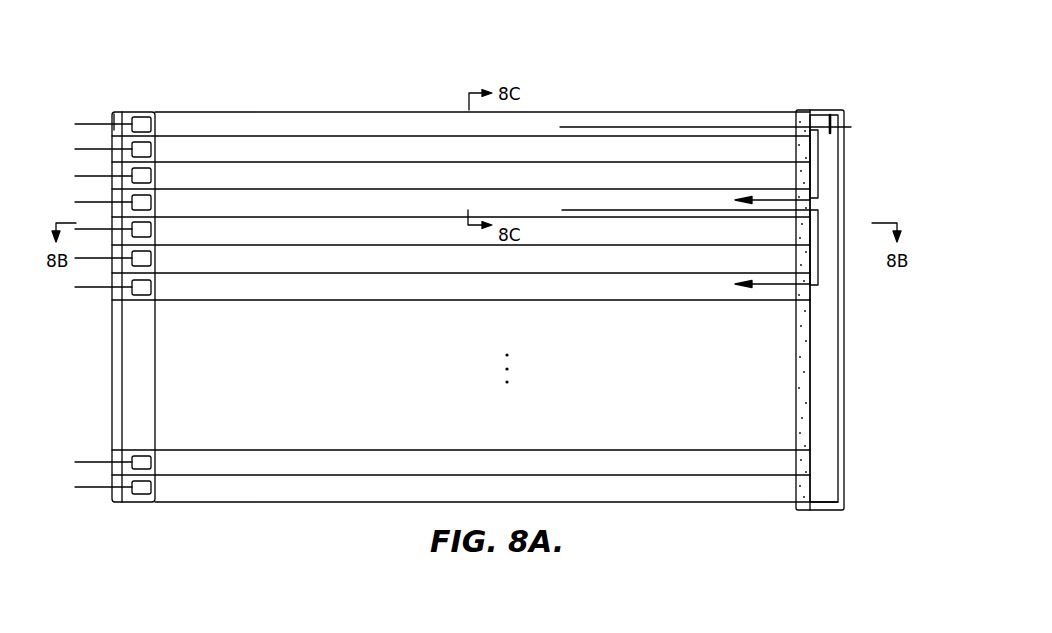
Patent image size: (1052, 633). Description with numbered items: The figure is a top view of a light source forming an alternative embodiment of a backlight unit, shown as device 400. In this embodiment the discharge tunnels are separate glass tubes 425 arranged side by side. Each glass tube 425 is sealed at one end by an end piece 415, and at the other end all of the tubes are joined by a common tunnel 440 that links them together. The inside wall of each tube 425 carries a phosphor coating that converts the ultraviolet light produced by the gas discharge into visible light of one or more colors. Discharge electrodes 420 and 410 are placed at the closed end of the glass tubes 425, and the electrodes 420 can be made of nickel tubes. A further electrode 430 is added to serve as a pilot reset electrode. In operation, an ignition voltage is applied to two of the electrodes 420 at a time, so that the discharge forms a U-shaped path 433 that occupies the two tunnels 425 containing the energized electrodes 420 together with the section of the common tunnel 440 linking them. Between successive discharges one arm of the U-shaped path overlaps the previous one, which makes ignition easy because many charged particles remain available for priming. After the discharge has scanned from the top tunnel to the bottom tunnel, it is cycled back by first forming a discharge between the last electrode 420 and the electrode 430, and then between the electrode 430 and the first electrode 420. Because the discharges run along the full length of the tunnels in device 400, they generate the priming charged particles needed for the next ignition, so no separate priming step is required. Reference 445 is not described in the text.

The device 400 is at (788, 43).
The discharge electrode 410 is at (76, 123).
The end piece 415 is at (116, 116).
The discharge electrodes 420 is at (140, 122).
The glass tube 425 is at (335, 125).
The electrode 430 is at (851, 127).
The U-shaped path 433 is at (818, 232).
The common tunnel 440 is at (822, 324).
The conductive strip 445 is at (798, 488).